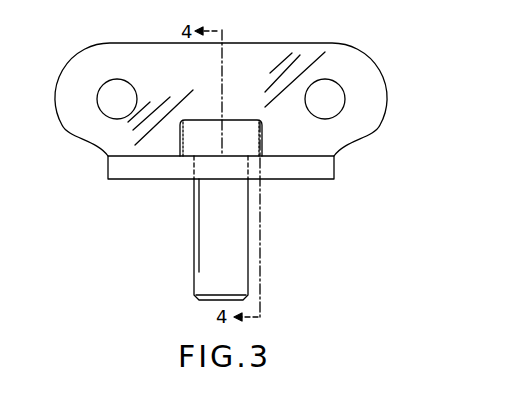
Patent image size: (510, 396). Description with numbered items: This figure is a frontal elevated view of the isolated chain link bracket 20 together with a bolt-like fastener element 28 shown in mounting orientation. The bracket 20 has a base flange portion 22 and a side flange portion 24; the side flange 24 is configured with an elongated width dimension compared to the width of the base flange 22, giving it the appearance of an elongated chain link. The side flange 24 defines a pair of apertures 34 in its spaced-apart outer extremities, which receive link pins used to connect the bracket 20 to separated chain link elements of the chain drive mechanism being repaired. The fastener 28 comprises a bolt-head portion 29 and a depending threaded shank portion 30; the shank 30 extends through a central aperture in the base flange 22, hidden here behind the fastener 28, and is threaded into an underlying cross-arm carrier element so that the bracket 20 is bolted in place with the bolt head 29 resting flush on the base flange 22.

The chain link bracket member 20 is at (243, 55).
The base flange portion 22 is at (120, 170).
The side flange portion 24 is at (181, 77).
The bolt-like fastener element 28 is at (237, 242).
The bolt-head portion 29 is at (192, 147).
The threaded shank portion 30 is at (212, 230).
The apertures 34 is at (100, 97).